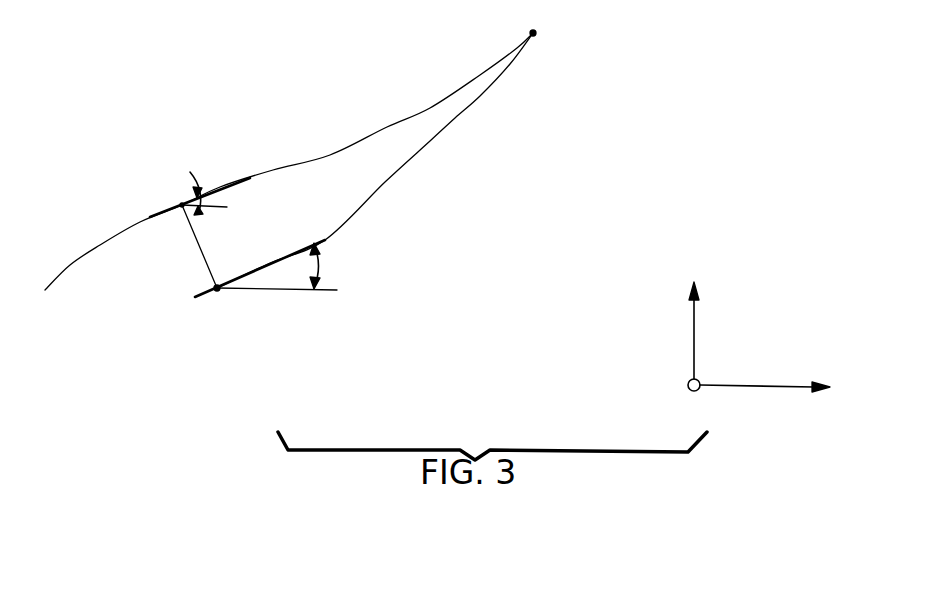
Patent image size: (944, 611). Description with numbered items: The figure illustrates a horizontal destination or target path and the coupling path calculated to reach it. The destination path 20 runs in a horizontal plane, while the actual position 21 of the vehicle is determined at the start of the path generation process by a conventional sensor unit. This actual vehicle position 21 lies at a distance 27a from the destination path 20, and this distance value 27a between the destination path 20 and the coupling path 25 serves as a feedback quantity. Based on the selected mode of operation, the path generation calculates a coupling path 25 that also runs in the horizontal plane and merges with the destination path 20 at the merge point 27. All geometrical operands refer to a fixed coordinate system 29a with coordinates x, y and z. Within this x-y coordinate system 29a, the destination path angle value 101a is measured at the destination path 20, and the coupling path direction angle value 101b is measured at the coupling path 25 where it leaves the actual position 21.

The destination path 20 is at (273, 170).
The coupling path 25 is at (385, 180).
The merge point 27 is at (559, 29).
The distance 27a is at (197, 240).
The actual position of the vehicle 21 is at (220, 293).
The destination path angle value 101a is at (203, 198).
The coupling path direction angle value 101b is at (351, 266).
The fixed coordinate system 29a is at (769, 250).